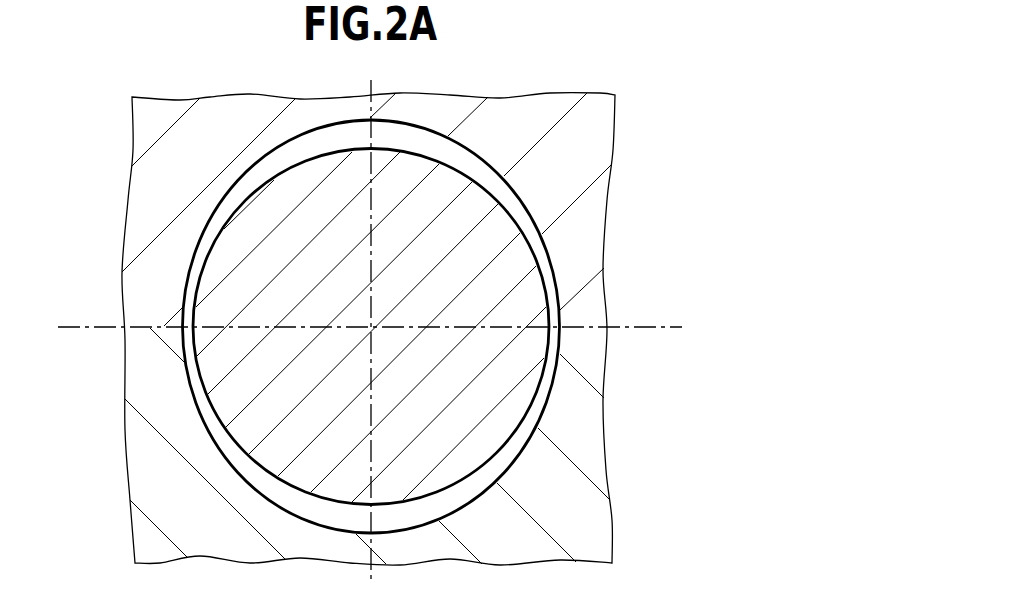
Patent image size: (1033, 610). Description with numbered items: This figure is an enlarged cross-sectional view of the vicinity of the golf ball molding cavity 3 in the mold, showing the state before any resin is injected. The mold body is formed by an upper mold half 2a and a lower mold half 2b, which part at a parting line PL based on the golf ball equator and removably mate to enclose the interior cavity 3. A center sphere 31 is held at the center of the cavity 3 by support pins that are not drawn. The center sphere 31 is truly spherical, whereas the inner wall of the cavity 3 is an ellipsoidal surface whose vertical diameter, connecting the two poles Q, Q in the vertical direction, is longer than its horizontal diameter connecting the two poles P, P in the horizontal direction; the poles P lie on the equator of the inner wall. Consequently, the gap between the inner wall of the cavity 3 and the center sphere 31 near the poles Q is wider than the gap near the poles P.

The upper mold half 2a is at (562, 147).
The lower mold half 2b is at (560, 513).
The cavity 3 is at (545, 392).
The center sphere 31 is at (537, 428).
The poles in horizontal direction P is at (182, 327).
The poles in vertical direction Q is at (371, 120).
The parting line PL is at (103, 327).